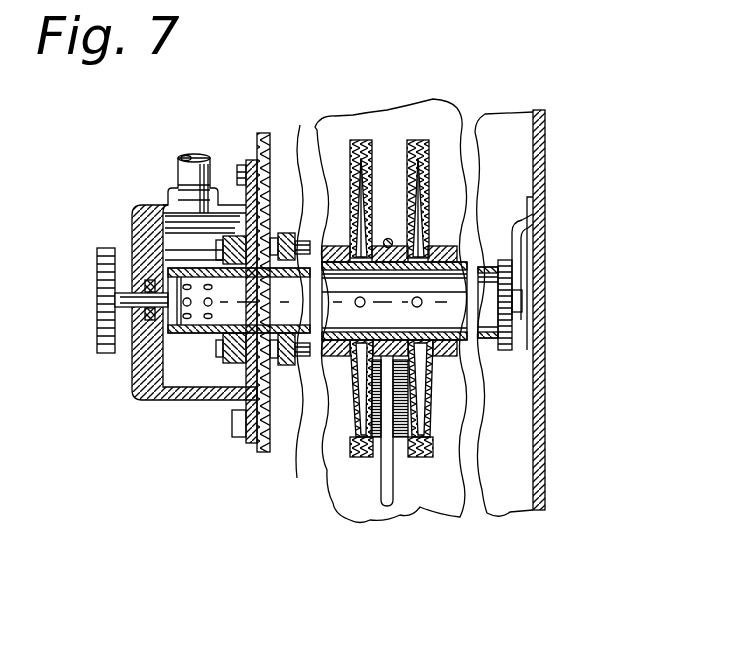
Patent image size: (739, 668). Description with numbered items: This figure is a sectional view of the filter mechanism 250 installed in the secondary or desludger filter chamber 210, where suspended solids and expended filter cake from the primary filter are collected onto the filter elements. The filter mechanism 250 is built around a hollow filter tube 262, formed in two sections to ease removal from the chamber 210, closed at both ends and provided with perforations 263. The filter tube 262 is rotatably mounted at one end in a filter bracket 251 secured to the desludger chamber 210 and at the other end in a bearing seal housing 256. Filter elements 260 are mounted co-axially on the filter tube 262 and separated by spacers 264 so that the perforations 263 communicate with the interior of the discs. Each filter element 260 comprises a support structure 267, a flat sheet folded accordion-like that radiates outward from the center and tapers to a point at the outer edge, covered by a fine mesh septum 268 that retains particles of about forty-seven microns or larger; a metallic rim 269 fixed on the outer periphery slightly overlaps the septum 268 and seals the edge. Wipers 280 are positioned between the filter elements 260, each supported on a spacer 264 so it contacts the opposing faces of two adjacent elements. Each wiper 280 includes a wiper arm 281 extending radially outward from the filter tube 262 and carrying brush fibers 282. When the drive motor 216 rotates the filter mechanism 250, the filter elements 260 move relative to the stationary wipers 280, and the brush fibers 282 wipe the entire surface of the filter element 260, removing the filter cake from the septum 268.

The desludger chamber 210 is at (256, 136).
The drive motor 216 is at (110, 355).
The filter mechanism 250 is at (346, 98).
The filter bracket 251 is at (505, 260).
The bearing seal housing 256 is at (153, 207).
The filter element 260 is at (392, 123).
The filter tube 262 is at (522, 221).
The perforations 263 is at (416, 308).
The spacer 264 is at (400, 138).
The support structure 267 is at (430, 218).
The septum 268 is at (345, 215).
The metallic rim 269 is at (458, 126).
The wiper 280 is at (400, 510).
The wiper arm 281 is at (382, 482).
The brush fibers 282 is at (395, 468).